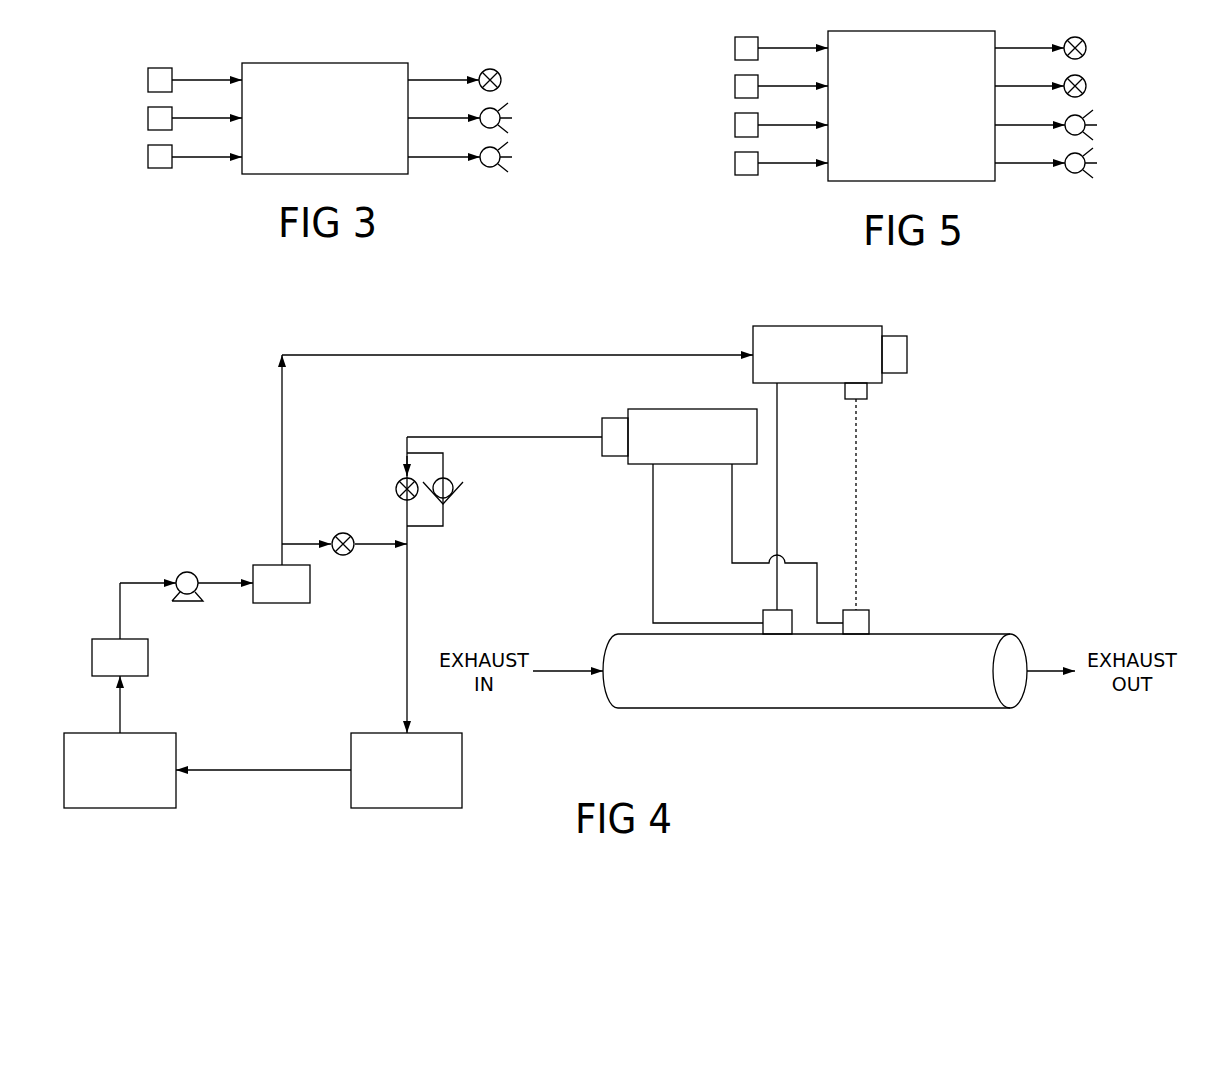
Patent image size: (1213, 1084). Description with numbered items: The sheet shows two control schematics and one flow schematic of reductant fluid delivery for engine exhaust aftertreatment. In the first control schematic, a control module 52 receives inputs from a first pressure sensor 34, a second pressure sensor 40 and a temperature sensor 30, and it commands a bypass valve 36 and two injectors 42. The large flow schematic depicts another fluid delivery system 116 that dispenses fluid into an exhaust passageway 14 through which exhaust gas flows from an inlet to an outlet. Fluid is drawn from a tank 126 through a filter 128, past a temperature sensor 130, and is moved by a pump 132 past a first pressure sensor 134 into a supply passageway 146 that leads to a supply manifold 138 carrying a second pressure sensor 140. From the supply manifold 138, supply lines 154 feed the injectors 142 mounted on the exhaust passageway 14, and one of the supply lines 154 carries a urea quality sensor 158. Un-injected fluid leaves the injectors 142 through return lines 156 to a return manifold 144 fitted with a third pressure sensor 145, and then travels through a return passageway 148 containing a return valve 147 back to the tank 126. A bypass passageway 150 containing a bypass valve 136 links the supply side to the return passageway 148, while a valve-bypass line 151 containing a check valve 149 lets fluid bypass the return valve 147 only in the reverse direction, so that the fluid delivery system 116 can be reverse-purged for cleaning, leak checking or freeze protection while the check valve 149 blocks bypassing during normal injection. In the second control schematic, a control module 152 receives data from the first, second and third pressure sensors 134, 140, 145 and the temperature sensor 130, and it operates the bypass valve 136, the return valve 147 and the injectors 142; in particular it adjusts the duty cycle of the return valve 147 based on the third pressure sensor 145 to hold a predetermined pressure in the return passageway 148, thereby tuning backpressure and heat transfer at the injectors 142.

In FIG. 4, the exhaust passageway 14 is at (818, 698).
In FIG. 3, the temperature sensor 30 is at (148, 157).
In FIG. 3, the first pressure sensor 34 is at (148, 80).
In FIG. 3, the bypass valve 36 is at (493, 70).
In FIG. 3, the second pressure sensor 40 is at (148, 118).
In FIG. 3, the injectors 42 is at (500, 110).
In FIG. 3, the control module 52 is at (325, 63).
In FIG. 4, the fluid delivery system 116 is at (541, 328).
In FIG. 4, the tank 126 is at (462, 770).
In FIG. 4, the filter 128 is at (120, 810).
In FIG. 5, the temperature sensor 130 is at (735, 163).
In FIG. 4, the temperature sensor 130 is at (148, 657).
In FIG. 4, the pump 132 is at (185, 572).
In FIG. 5, the first pressure sensor 134 is at (735, 48).
In FIG. 4, the first pressure sensor 134 is at (282, 604).
In FIG. 5, the bypass valve 136 is at (1087, 52).
In FIG. 4, the bypass valve 136 is at (336, 534).
In FIG. 4, the supply manifold 138 is at (820, 336).
In FIG. 5, the second pressure sensor 140 is at (735, 86).
In FIG. 4, the second pressure sensor 140 is at (905, 357).
In FIG. 5, the injectors 142 is at (1085, 135).
In FIG. 4, the injectors 142 is at (770, 610).
In FIG. 4, the return manifold 144 is at (695, 418).
In FIG. 5, the third pressure sensor 145 is at (735, 125).
In FIG. 4, the third pressure sensor 145 is at (615, 420).
In FIG. 4, the supply passageway 146 is at (282, 472).
In FIG. 5, the return valve 147 is at (1087, 90).
In FIG. 4, the return valve 147 is at (398, 481).
In FIG. 4, the return passageway 148 is at (407, 590).
In FIG. 4, the check valve 149 is at (452, 497).
In FIG. 4, the bypass passageway 150 is at (373, 544).
In FIG. 4, the valve-bypass line 151 is at (443, 463).
In FIG. 5, the control module 152 is at (846, 157).
In FIG. 4, the supply lines 154 is at (777, 500).
In FIG. 4, the return lines 156 is at (732, 540).
In FIG. 4, the urea quality sensor 158 is at (868, 390).